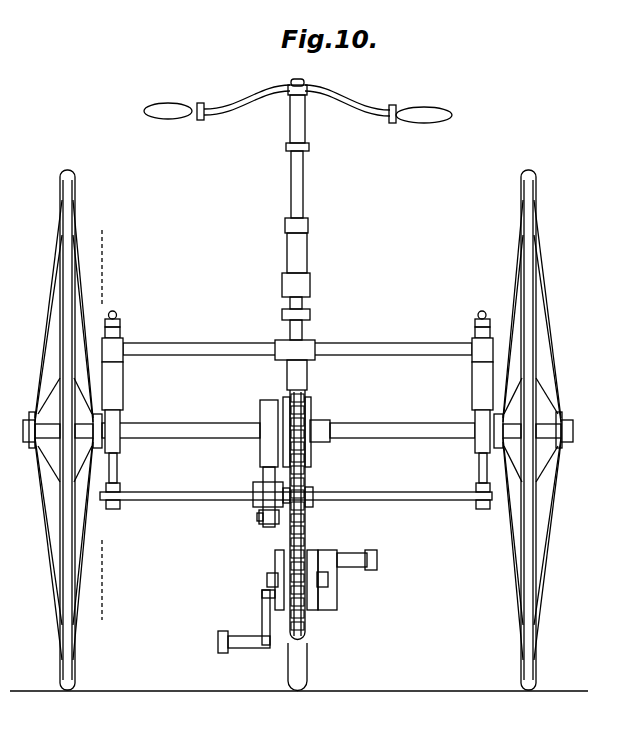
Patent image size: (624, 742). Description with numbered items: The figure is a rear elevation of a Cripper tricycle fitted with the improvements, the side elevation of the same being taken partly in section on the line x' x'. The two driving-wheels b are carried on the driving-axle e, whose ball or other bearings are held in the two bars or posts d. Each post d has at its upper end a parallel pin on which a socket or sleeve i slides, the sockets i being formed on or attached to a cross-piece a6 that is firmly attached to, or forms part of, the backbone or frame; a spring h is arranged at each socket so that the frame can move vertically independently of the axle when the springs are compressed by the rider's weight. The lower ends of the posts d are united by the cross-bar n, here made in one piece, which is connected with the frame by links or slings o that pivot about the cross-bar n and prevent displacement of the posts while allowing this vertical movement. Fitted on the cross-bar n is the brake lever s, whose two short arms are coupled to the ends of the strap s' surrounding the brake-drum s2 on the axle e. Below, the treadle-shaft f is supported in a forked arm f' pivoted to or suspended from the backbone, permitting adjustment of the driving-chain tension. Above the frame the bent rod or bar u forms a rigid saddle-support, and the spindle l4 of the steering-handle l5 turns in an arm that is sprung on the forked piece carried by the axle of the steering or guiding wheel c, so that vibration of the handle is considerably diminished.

The driving-wheel b is at (298, 430).
The section line x' is at (102, 426).
The driving-axle e is at (288, 431).
The cross-piece a6 is at (187, 339).
The cross-bar n is at (162, 497).
The socket or sleeve i is at (297, 336).
The spring h is at (297, 407).
The bar or post d is at (118, 466).
The steering-handle l5 is at (298, 115).
The spindle l4 is at (304, 212).
The bent rod or bar u is at (305, 303).
The link or sling o is at (311, 492).
The brake-drum s2 is at (260, 411).
The strap s' is at (270, 485).
The lever s is at (263, 503).
The forked arm f' is at (308, 580).
The treadle-shaft f is at (246, 621).
The steering or guiding wheel c is at (305, 666).